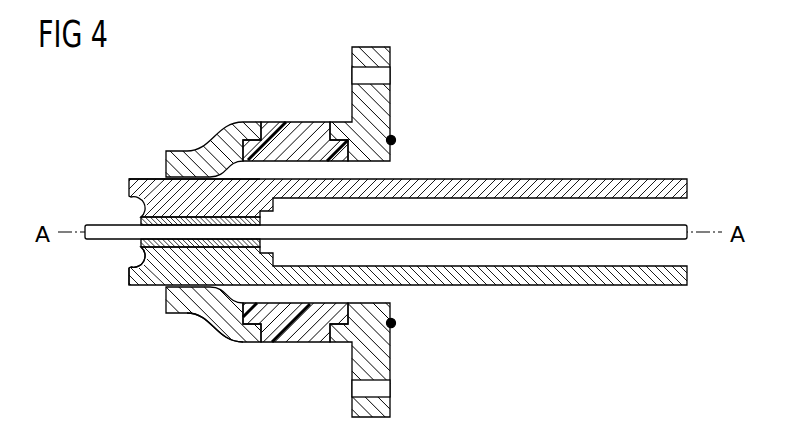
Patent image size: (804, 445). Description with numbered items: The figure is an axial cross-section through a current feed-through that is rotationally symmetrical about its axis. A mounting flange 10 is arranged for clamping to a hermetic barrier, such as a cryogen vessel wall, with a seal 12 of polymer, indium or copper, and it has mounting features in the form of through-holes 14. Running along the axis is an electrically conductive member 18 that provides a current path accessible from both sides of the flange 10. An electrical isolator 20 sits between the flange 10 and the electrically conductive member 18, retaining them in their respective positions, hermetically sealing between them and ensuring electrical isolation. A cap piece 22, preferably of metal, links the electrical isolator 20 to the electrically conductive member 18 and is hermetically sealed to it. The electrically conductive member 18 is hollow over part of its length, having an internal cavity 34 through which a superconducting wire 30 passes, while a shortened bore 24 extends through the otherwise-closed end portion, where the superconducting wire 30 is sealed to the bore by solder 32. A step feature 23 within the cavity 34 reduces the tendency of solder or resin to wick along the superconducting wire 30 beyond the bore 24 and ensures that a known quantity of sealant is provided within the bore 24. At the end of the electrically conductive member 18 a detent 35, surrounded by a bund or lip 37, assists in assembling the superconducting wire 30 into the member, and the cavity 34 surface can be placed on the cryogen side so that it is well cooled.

The mounting flange 10 is at (394, 107).
The seal 12 is at (396, 140).
The through-holes 14 is at (394, 76).
The electrically conductive member 18 is at (656, 187).
The electrical isolator 20 is at (295, 132).
The cap piece 22 is at (185, 160).
The step feature 23 is at (224, 318).
The bore 24 is at (142, 178).
The superconducting wire 30 is at (596, 226).
The solder 32 is at (141, 222).
The internal cavity 34 is at (676, 256).
The detent 35 is at (133, 256).
The bund or lip 37 is at (130, 278).